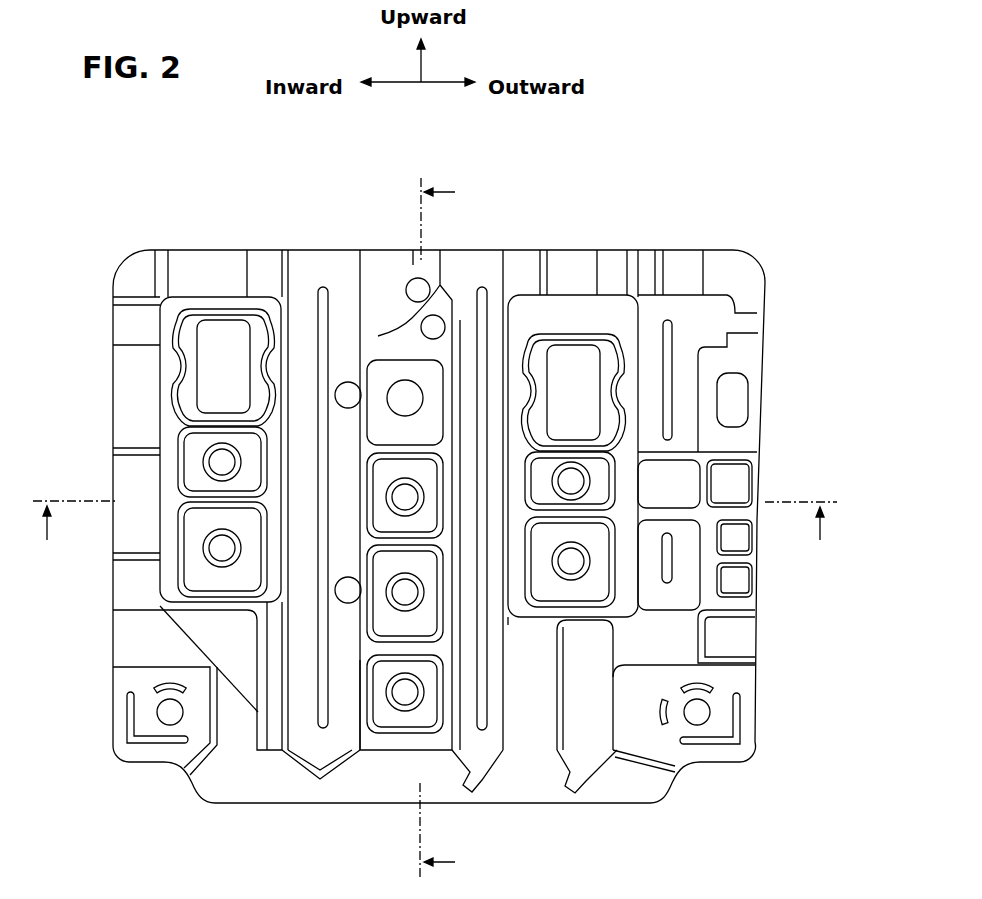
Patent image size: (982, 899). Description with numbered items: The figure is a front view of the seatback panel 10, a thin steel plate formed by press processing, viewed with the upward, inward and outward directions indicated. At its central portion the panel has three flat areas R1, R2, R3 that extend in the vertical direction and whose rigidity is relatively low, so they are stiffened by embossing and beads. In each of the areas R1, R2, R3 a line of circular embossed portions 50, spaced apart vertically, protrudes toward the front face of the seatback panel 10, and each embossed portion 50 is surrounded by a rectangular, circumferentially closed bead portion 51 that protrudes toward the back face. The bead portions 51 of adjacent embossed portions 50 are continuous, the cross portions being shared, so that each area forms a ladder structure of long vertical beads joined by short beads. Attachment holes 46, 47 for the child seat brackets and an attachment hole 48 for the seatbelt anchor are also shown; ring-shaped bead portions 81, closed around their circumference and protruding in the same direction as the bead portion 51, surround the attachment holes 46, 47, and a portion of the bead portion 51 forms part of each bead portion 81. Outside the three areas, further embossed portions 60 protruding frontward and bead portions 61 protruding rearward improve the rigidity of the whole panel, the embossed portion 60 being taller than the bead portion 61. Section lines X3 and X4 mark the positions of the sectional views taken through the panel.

The seatback panel 10 is at (674, 159).
The attachment hole 46 is at (572, 365).
The attachment hole 47 is at (218, 332).
The attachment hole 48 is at (405, 397).
The embossed portion 50 is at (216, 461).
The bead portion 51 is at (180, 468).
The embossed portion 60 is at (347, 390).
The bead portion 61 is at (320, 330).
The ring-shaped bead portion 81 is at (180, 331).
The area R1 is at (165, 603).
The area R2 is at (366, 660).
The area R3 is at (512, 617).
The section line X3 is at (452, 529).
The section line X4 is at (435, 537).